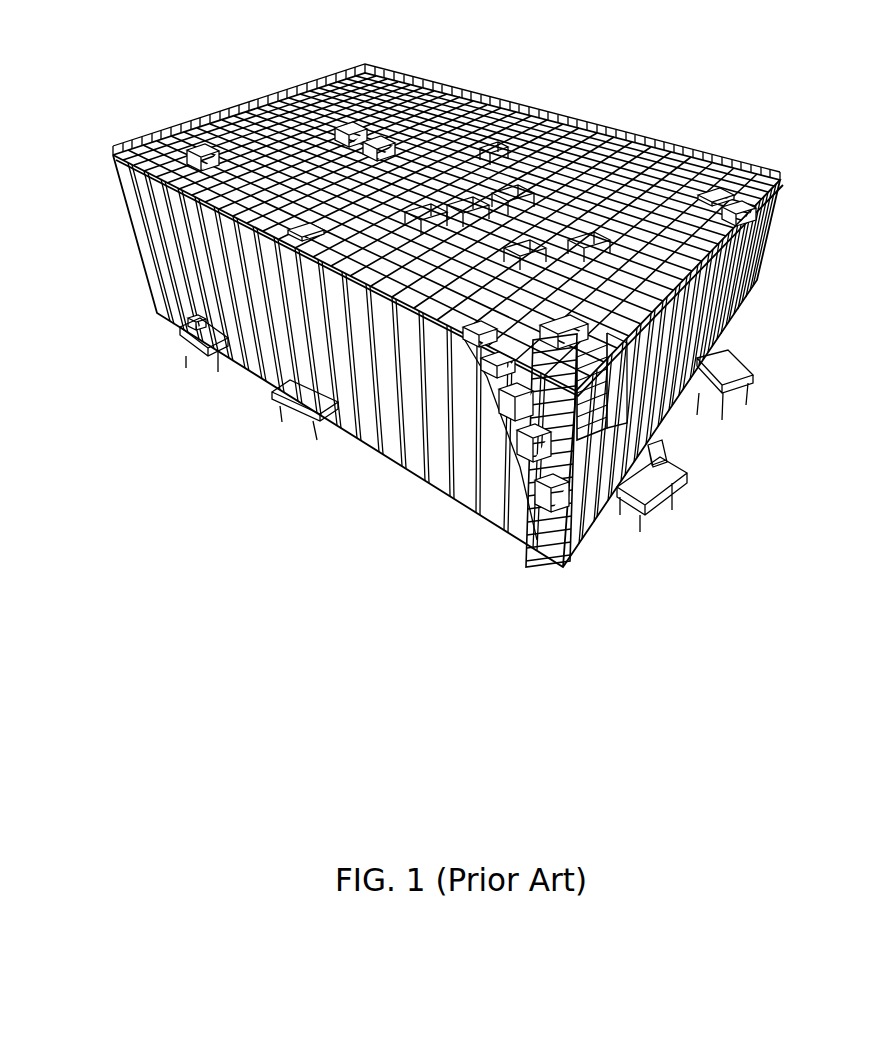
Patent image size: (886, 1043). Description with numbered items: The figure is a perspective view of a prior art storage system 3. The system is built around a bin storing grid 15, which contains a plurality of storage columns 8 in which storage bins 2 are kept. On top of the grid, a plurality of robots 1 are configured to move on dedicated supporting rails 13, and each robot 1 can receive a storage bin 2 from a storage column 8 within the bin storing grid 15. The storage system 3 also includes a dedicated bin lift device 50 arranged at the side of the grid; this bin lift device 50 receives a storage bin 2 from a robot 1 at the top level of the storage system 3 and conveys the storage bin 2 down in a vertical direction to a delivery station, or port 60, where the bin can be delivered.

The robot 1 is at (409, 310).
The storage bin 2 is at (510, 107).
The storage system 3 is at (94, 84).
The storage column 8 is at (353, 83).
The supporting rails 13 is at (603, 130).
The bin storing grid 15 is at (94, 273).
The bin lift device 50 is at (262, 375).
The port 60 is at (298, 418).